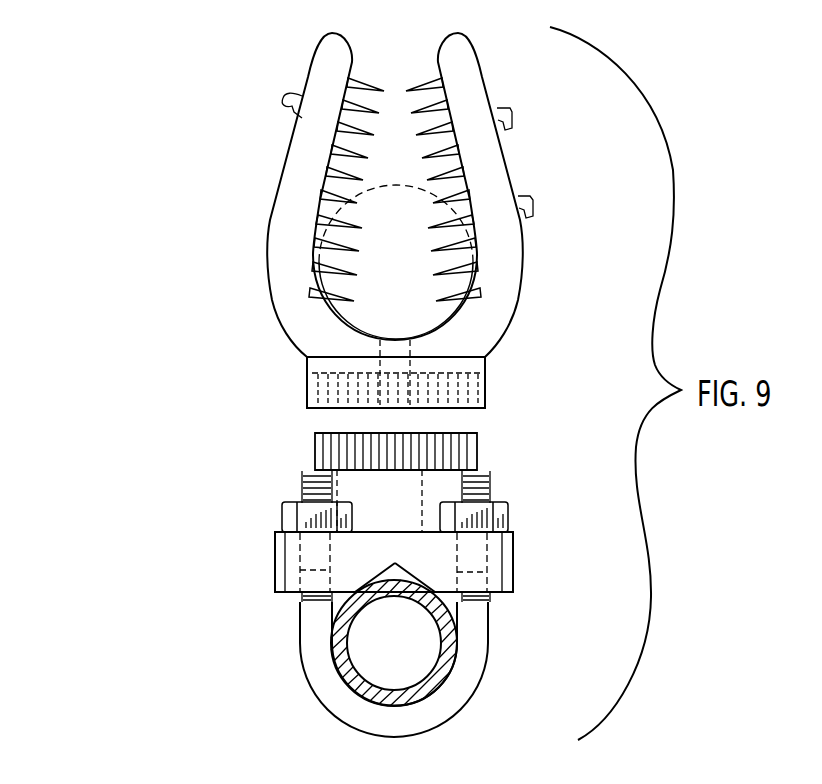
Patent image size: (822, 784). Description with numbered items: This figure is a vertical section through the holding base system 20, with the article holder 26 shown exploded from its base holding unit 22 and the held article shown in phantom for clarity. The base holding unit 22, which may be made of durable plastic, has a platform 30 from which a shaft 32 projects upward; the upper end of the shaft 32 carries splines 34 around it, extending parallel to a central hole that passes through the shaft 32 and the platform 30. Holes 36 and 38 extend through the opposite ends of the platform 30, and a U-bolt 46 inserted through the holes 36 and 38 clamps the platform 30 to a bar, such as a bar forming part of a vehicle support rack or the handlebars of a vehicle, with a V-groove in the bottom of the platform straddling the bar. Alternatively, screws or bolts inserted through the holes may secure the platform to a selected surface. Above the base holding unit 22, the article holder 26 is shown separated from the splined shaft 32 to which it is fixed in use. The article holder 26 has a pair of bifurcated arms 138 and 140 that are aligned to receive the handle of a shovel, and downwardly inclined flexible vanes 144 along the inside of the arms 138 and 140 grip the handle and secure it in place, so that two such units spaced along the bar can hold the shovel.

The holding base system 20 is at (190, 413).
The base holding unit 22 is at (219, 476).
The article holder 26 is at (231, 322).
The platform 30 is at (275, 548).
The shaft 32 is at (450, 482).
The splines 34 is at (476, 443).
The hole 36 is at (298, 571).
The hole 38 is at (500, 572).
The U-bolt 46 is at (305, 652).
The bifurcated arm 138 is at (313, 92).
The bifurcated arm 140 is at (477, 88).
The flexible vanes 144 is at (372, 150).